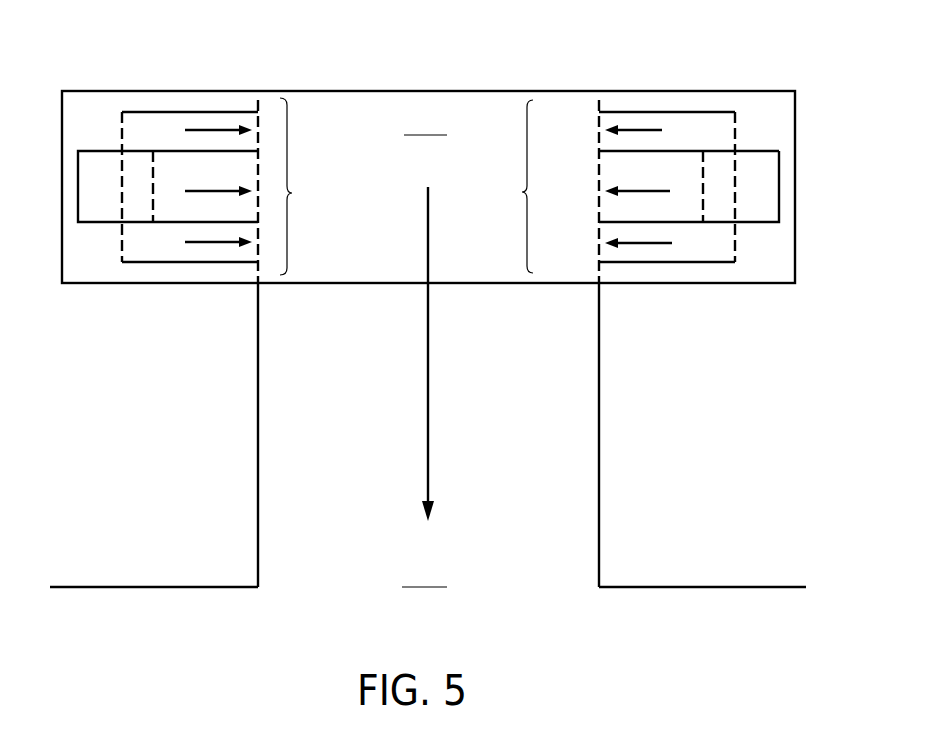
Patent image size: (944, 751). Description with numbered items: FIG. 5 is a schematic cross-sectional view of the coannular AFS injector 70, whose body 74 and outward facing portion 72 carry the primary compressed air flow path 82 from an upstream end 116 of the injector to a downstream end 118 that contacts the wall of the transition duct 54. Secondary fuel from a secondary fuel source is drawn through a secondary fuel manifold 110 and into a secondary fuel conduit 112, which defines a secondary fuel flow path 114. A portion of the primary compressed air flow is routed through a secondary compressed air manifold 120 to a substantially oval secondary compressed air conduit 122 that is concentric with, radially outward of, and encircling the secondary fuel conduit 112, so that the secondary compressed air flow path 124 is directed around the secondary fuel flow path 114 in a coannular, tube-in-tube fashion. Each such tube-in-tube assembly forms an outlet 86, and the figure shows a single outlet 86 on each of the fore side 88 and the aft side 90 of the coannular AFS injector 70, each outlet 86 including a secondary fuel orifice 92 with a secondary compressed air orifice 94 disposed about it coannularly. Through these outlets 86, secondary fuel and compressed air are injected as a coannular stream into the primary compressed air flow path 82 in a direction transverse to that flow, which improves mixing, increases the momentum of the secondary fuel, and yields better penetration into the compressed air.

The transition duct 54 is at (144, 568).
The coannular AFS injector 70 is at (179, 386).
The outward facing portion 72 is at (729, 311).
The body 74 is at (644, 465).
The primary compressed air flow path 82 is at (427, 206).
The outlets 86 is at (406, 186).
The fore side 88 is at (286, 346).
The aft side 90 is at (577, 350).
The secondary fuel orifice 92 is at (262, 193).
The secondary compressed air orifice 94 is at (262, 122).
The secondary fuel manifold 110 is at (774, 176).
The secondary fuel conduit 112 is at (600, 160).
The secondary fuel flow path 114 is at (219, 190).
The upstream end 116 is at (425, 123).
The downstream end 118 is at (424, 575).
The secondary compressed air manifold 120 is at (743, 136).
The secondary compressed air conduit 122 is at (600, 123).
The secondary compressed air flow path 124 is at (186, 128).